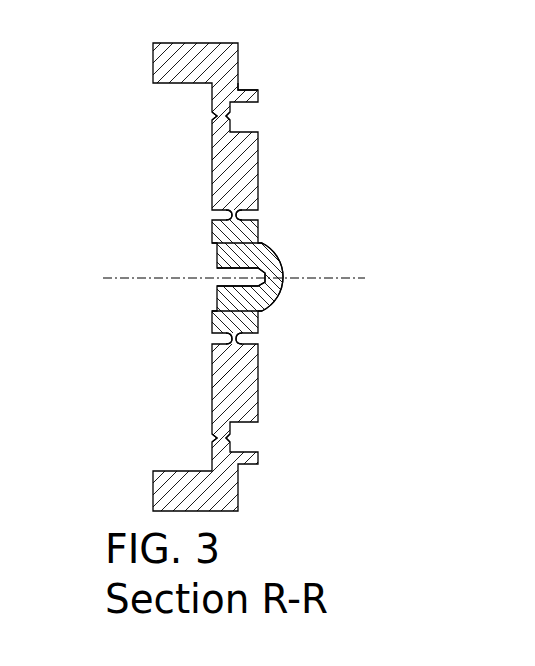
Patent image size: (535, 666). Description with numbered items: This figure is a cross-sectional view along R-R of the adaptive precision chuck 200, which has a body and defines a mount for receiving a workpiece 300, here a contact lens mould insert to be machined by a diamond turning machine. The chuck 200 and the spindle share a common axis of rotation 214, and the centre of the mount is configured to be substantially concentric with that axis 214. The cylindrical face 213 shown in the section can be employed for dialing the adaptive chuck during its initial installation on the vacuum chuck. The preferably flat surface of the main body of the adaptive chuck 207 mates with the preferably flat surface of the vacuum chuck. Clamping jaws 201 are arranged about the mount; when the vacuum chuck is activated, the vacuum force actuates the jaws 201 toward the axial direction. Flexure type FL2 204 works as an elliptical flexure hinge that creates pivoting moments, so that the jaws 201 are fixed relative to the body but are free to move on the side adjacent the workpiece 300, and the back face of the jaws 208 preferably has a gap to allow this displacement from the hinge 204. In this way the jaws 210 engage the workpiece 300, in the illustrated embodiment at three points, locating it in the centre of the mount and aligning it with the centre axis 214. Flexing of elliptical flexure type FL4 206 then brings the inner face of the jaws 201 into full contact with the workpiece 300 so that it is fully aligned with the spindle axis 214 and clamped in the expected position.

The adaptive chuck 200 is at (258, 92).
The clamping jaws 201 is at (258, 137).
The flexure type FL2 204 is at (216, 116).
The flexure type FL4 206 is at (225, 219).
The main body of the adaptive chuck 207 is at (212, 112).
The back face of the jaws 208 is at (212, 160).
The jaws 210 is at (260, 227).
The cylindrical face 213 is at (240, 90).
The axis of rotation 214 is at (128, 277).
The workpiece 300 is at (285, 263).